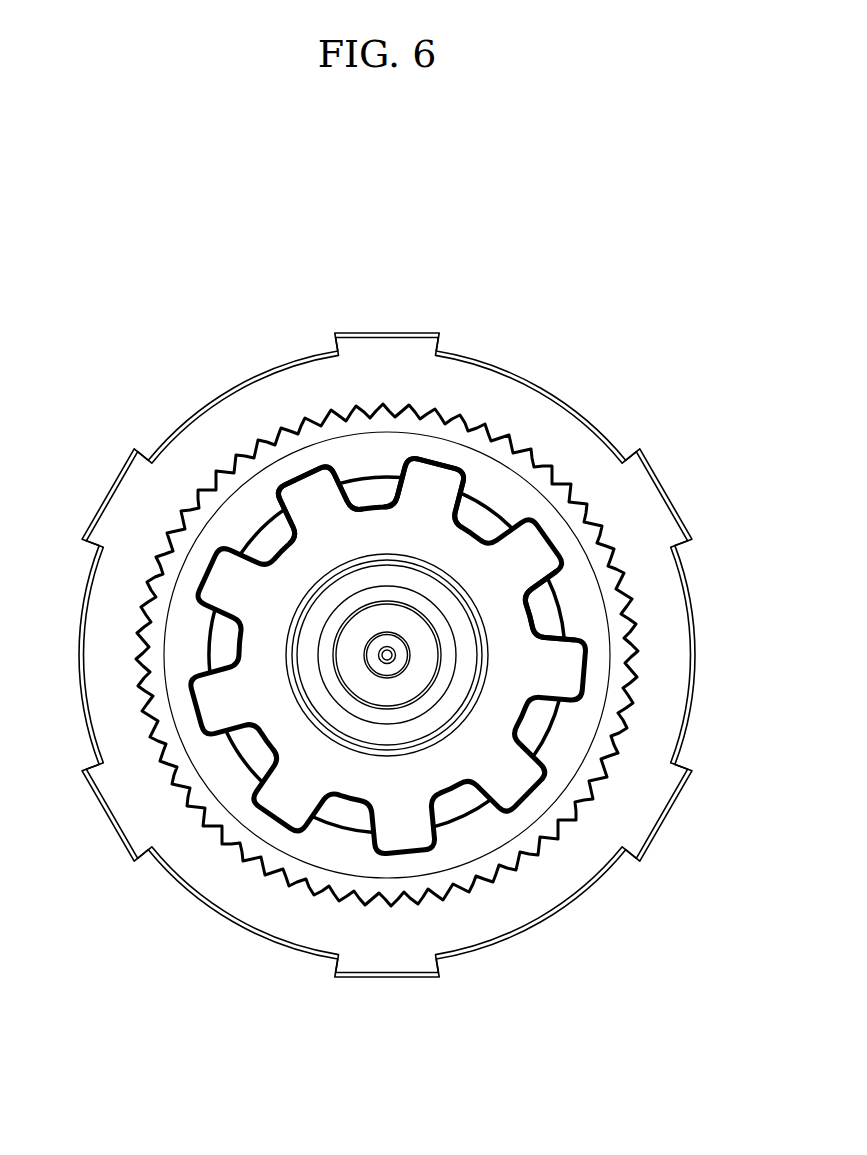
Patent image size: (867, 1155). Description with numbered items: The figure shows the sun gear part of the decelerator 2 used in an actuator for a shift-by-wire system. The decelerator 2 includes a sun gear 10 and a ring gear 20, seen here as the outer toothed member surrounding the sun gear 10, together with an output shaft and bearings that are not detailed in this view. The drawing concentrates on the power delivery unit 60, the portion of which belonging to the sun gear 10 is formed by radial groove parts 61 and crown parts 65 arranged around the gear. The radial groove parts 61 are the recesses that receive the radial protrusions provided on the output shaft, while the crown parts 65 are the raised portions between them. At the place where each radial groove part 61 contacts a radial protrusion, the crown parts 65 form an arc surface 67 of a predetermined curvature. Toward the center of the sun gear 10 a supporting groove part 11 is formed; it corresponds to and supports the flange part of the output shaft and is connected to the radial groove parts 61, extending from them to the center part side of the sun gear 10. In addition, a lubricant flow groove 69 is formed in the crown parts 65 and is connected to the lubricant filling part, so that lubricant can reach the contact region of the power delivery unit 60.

The decelerator 2 is at (380, 227).
The sun gear 10 is at (543, 483).
The supporting groove part 11 is at (437, 768).
The ring gear 20 is at (465, 383).
The power delivery unit 60 is at (328, 490).
The radial groove parts 61 is at (332, 470).
The crown parts 65 is at (375, 496).
The arc surface 67 is at (412, 493).
The lubricant flow groove 69 is at (556, 608).